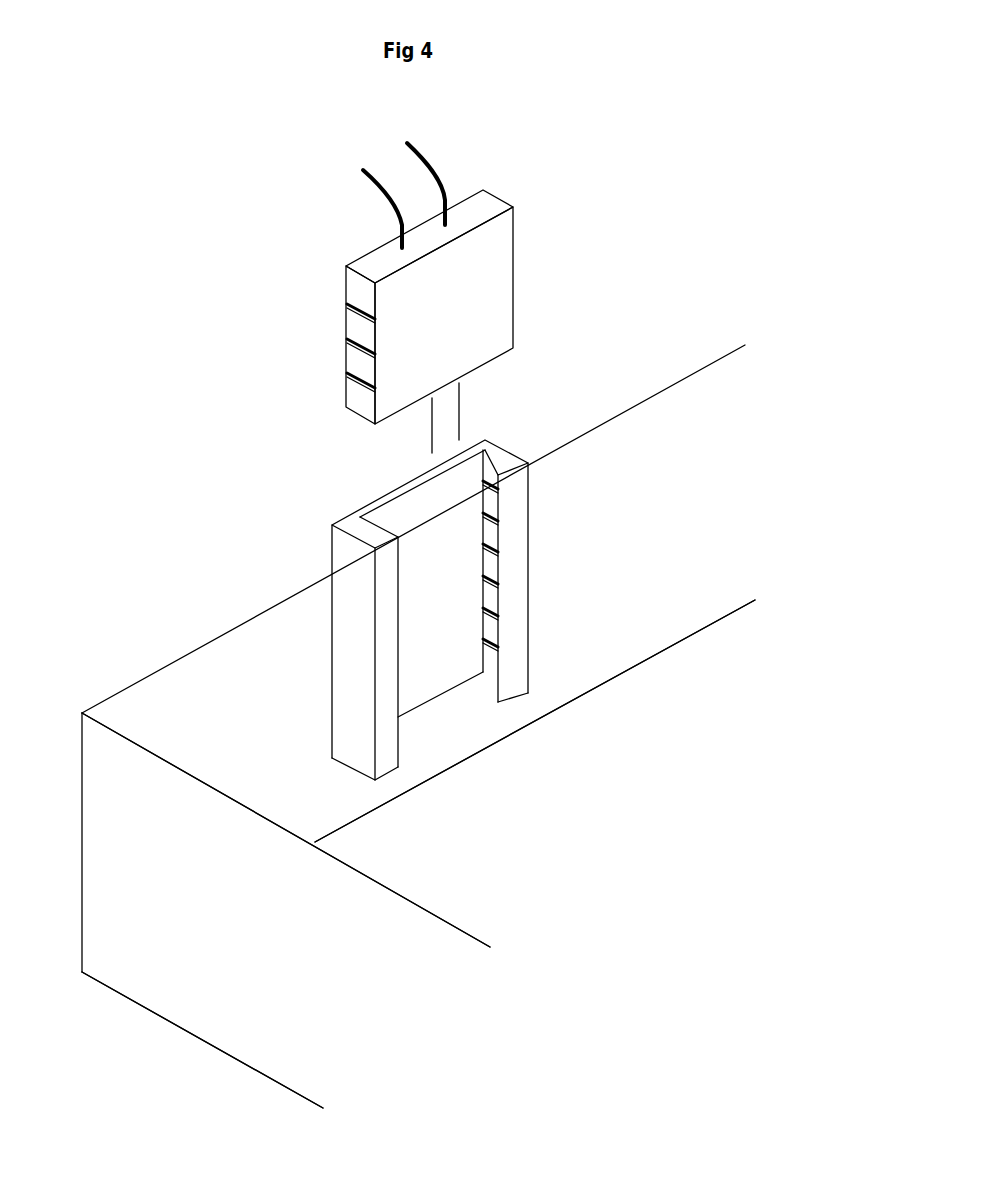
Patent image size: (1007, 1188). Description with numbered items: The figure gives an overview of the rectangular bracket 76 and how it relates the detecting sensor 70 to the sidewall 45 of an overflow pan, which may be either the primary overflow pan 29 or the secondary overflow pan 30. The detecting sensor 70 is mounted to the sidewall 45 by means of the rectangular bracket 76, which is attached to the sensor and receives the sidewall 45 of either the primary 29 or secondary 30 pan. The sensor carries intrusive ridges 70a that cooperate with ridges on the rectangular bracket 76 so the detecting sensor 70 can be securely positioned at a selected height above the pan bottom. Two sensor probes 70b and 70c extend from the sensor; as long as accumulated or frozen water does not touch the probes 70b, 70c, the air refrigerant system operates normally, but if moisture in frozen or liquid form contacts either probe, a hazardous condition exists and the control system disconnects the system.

The detecting sensor 70 is at (514, 283).
The intrusive ridges 70a is at (231, 331).
The sensor probe 70b is at (354, 448).
The sensor probe 70c is at (547, 403).
The rectangular bracket 76 is at (612, 610).
The sidewall 45 is at (376, 658).
The primary overflow pan 29 is at (443, 854).
The secondary overflow pan 30 is at (418, 854).